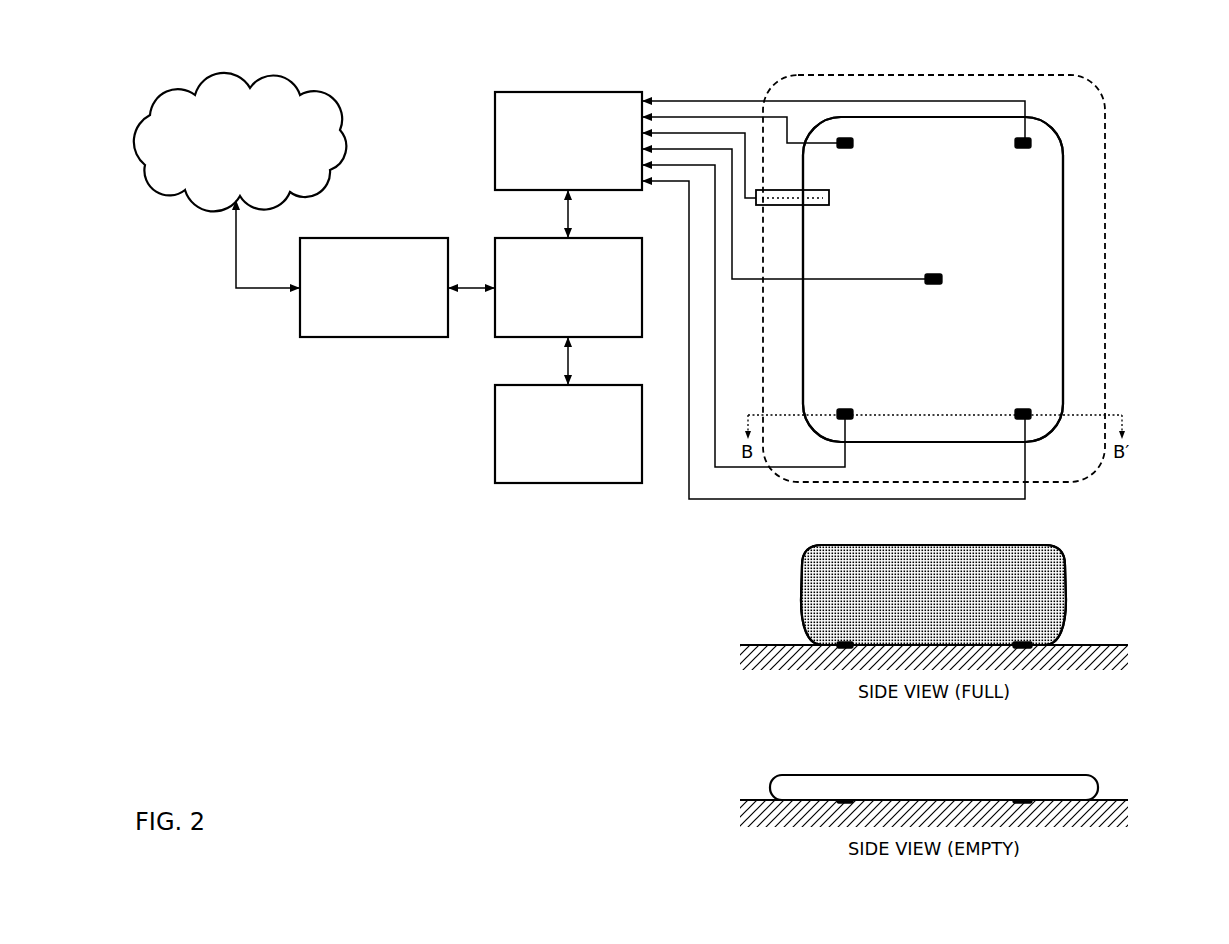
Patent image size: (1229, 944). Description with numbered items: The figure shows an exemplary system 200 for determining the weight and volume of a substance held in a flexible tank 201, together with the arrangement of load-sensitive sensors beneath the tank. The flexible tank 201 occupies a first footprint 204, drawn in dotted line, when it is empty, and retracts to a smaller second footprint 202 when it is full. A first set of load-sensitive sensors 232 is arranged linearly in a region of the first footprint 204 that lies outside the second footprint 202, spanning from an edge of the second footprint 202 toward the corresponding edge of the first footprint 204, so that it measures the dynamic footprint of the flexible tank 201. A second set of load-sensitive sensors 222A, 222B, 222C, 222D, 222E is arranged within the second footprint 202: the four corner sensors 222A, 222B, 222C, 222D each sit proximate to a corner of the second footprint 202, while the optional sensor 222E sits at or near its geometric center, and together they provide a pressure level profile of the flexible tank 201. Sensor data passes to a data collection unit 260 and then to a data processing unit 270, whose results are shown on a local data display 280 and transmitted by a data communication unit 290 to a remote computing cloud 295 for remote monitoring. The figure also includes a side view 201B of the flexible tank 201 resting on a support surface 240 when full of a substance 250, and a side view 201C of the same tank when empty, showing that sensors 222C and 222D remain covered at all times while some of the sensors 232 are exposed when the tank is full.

The system 200 is at (1172, 93).
The flexible tank 201 is at (919, 151).
The side view of full flexible tank 201B is at (913, 605).
The side view of empty flexible tank 201C is at (913, 798).
The second footprint 202 is at (1065, 157).
The first footprint 204 is at (1105, 223).
The load-sensitive sensor 222A is at (853, 143).
The load-sensitive sensor 222B is at (1015, 143).
The load-sensitive sensor 222C is at (853, 413).
The load-sensitive sensor 222D is at (1015, 413).
The load-sensitive sensor 222E is at (942, 280).
The first set of load-sensitive sensors 232 is at (829, 198).
The support surface 240 is at (748, 658).
The substance 250 is at (1040, 572).
The data collection unit 260 is at (609, 170).
The data processing unit 270 is at (609, 316).
The local data display 280 is at (622, 451).
The data communication unit 290 is at (414, 308).
The remote computing cloud 295 is at (218, 170).